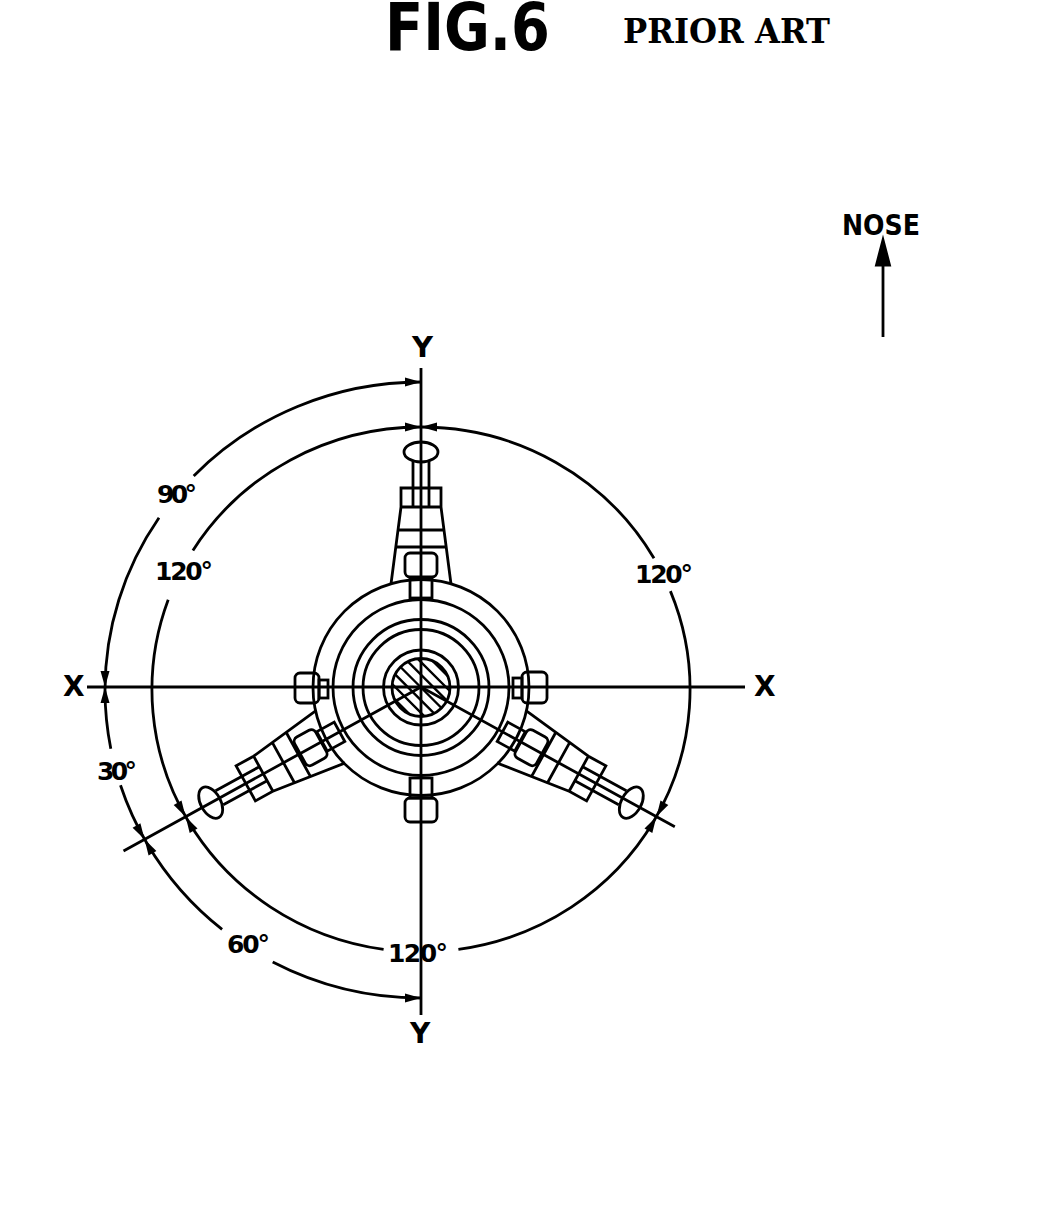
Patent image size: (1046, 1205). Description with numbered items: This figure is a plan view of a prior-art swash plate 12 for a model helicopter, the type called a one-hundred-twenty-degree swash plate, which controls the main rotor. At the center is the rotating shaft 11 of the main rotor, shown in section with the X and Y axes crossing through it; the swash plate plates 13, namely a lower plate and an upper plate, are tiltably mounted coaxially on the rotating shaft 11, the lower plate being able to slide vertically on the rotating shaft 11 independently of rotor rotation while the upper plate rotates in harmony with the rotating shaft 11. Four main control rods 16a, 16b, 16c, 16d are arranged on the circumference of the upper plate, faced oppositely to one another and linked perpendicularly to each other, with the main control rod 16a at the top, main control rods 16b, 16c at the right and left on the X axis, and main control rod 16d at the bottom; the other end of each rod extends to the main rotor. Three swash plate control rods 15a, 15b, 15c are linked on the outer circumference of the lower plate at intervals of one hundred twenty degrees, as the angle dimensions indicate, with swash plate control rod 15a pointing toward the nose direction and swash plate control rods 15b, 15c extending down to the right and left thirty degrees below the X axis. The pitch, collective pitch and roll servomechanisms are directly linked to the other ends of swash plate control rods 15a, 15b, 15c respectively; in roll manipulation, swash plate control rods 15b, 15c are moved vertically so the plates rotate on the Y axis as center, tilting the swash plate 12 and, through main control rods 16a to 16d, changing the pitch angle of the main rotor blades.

The rotating shaft 11 is at (437, 661).
The swash plate 12 is at (359, 798).
The swash plate plates 13 is at (483, 779).
The swash plate control rod 15a is at (430, 452).
The swash plate control rod 15b is at (633, 795).
The swash plate control rod 15c is at (208, 795).
The main control rod 16a is at (428, 566).
The main control rod 16b is at (547, 672).
The main control rod 16c is at (297, 672).
The main control rod 16d is at (425, 822).